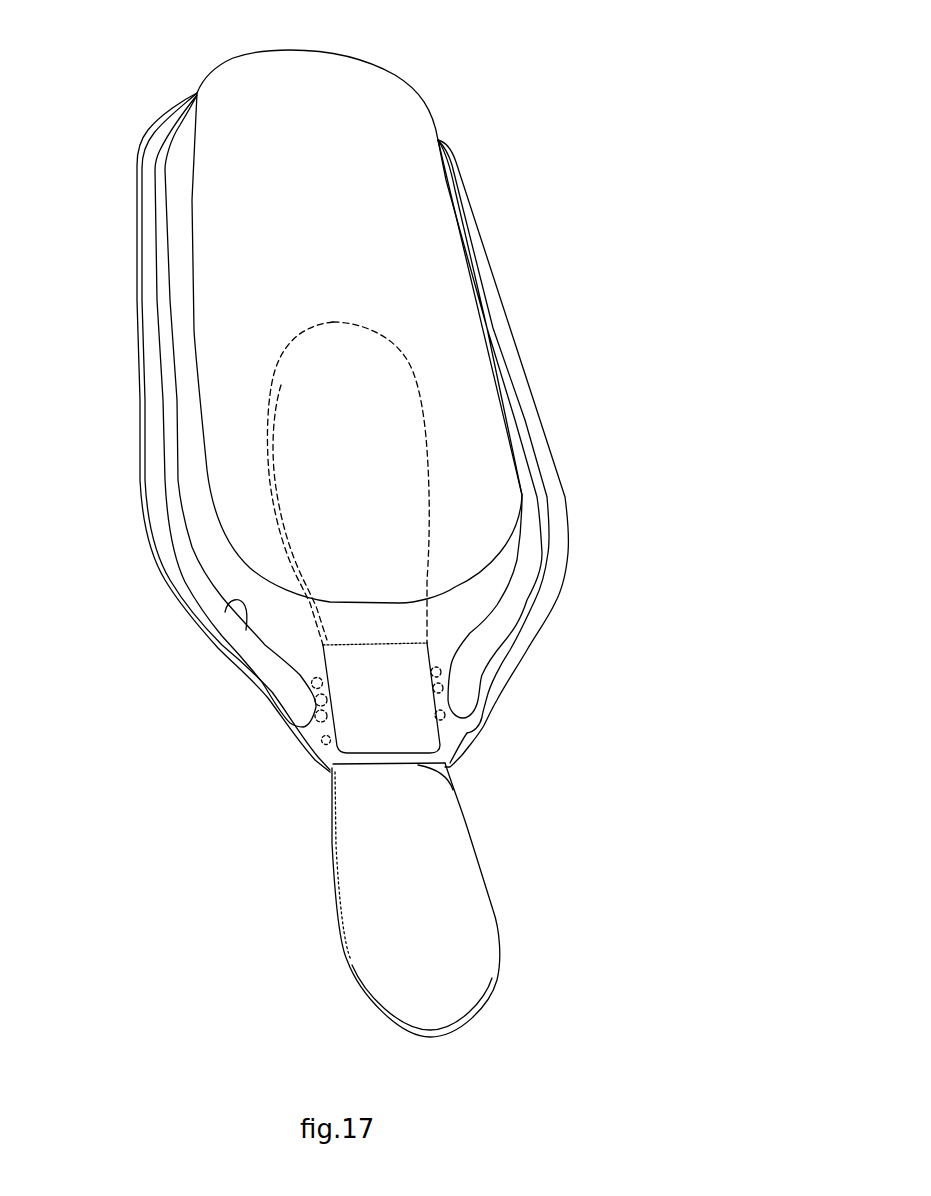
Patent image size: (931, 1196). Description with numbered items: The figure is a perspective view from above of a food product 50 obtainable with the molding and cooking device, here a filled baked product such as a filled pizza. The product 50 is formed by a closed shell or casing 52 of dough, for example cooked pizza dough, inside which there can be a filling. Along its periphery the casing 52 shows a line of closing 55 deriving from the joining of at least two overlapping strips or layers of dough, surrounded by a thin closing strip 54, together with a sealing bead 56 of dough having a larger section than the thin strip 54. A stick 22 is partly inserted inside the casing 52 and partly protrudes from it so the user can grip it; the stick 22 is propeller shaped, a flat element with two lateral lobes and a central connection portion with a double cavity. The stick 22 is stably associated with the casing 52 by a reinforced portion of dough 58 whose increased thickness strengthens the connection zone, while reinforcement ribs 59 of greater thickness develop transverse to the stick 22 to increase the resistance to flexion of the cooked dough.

The food product 50 is at (512, 104).
The closed shell or casing 52 is at (458, 357).
The thin closing strip 54 is at (224, 617).
The line of closing 55 is at (162, 322).
The sealing bead 56 is at (150, 444).
The reinforced portion of dough 58 is at (415, 745).
The reinforcement ribs 59 is at (441, 689).
The stick 22 is at (473, 892).